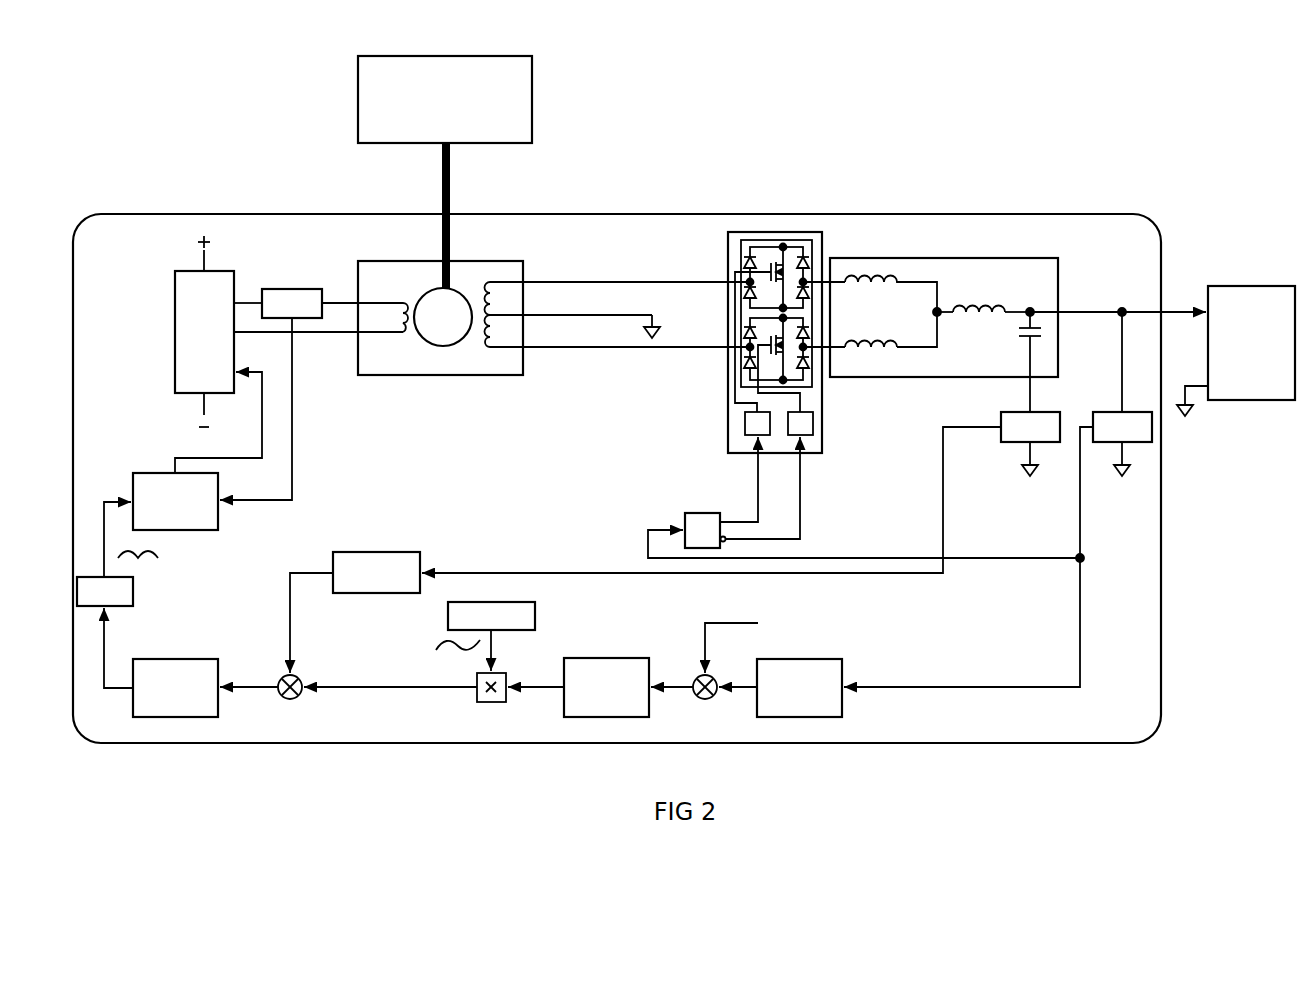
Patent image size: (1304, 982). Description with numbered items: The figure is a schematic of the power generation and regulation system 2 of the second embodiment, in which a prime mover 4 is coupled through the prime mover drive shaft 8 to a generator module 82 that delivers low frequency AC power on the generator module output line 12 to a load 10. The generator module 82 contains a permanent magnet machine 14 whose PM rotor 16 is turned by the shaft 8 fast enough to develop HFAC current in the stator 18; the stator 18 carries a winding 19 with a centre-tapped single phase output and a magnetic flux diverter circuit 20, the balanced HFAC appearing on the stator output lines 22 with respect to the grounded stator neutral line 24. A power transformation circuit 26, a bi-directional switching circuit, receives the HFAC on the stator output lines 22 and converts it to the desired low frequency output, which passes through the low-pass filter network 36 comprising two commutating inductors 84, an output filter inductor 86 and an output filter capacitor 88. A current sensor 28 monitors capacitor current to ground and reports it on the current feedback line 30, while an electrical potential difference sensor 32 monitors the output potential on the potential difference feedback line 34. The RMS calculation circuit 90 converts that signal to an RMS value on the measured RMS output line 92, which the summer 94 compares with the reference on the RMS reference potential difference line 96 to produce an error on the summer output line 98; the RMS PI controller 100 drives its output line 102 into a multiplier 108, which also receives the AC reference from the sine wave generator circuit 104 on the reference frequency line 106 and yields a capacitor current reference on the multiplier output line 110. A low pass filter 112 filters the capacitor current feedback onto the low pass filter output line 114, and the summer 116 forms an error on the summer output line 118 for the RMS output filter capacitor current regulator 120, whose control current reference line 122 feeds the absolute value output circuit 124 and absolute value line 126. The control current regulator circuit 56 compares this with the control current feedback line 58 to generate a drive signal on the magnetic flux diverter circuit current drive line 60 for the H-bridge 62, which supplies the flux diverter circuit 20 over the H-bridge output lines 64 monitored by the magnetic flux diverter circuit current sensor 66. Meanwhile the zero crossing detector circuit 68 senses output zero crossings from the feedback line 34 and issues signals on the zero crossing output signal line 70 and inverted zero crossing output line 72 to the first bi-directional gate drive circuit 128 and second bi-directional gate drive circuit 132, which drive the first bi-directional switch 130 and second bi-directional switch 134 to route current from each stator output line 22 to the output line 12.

The power generation and regulation system 2 is at (1003, 132).
The prime mover 4 is at (436, 110).
The prime mover drive shaft 8 is at (453, 199).
The load 10 is at (1238, 353).
The generator module output line 12 is at (1168, 315).
The permanent magnet machine 14 is at (526, 263).
The PM rotor 16 is at (430, 327).
The stator 18 is at (445, 377).
The winding 19 is at (490, 349).
The magnetic flux diverter circuit 20 is at (402, 336).
The stator output lines 22 is at (566, 284).
The stator neutral line 24 is at (566, 317).
The power transformation circuit 26 is at (728, 250).
The current sensor 28 is at (1017, 437).
The current feedback line 30 is at (943, 490).
The electrical potential difference sensor 32 is at (1109, 437).
The potential difference feedback line 34 is at (1080, 490).
The low-pass filter network 36 is at (1040, 258).
The control current regulator circuit 56 is at (162, 512).
The control current feedback line 58 is at (260, 500).
The magnetic flux diverter circuit current drive line 60 is at (200, 458).
The H-bridge 62 is at (191, 342).
The H-bridge output lines 64 is at (336, 300).
The magnetic flux diverter circuit current sensor 66 is at (279, 314).
The zero crossing detector circuit 68 is at (685, 521).
The zero crossing output signal line 70 is at (758, 474).
The inverted zero crossing output line 72 is at (803, 474).
The generator module 82 is at (772, 211).
The commutating inductors 84 is at (858, 285).
The output filter inductor 86 is at (962, 310).
The output filter capacitor 88 is at (1025, 338).
The root-mean-square calculation circuit 90 is at (786, 698).
The measured RMS output line 92 is at (745, 690).
The summer 94 is at (695, 698).
The RMS reference potential difference line 96 is at (720, 624).
The summer output line 98 is at (688, 681).
The RMS proportional-plus-integral controller 100 is at (587, 698).
The RMS controller output line 102 is at (555, 690).
The sine wave generator circuit 104 is at (472, 626).
The reference frequency line 106 is at (495, 640).
The multiplier 108 is at (478, 701).
The multiplier output line 110 is at (440, 686).
The low pass filter 112 is at (357, 582).
The low pass filter output line 114 is at (292, 605).
The summer 116 is at (300, 700).
The summer output line 118 is at (248, 690).
The RMS output filter capacitor current regulator 120 is at (156, 698).
The control current reference line 122 is at (105, 660).
The absolute value output circuit 124 is at (86, 602).
The absolute value line 126 is at (104, 520).
The first bi-directional gate drive circuit 128 is at (745, 426).
The first bi-directional switch 130 is at (745, 272).
The second bi-directional gate drive circuit 132 is at (813, 426).
The second bi-directional switch 134 is at (741, 378).